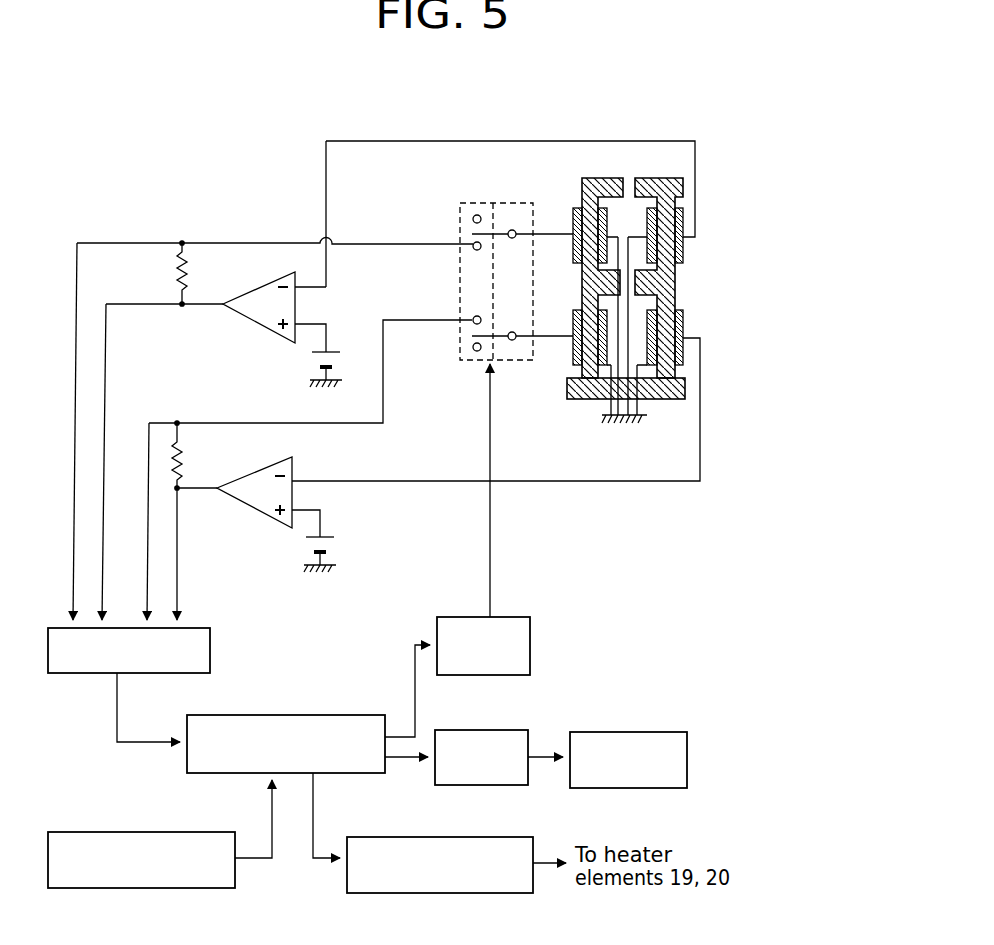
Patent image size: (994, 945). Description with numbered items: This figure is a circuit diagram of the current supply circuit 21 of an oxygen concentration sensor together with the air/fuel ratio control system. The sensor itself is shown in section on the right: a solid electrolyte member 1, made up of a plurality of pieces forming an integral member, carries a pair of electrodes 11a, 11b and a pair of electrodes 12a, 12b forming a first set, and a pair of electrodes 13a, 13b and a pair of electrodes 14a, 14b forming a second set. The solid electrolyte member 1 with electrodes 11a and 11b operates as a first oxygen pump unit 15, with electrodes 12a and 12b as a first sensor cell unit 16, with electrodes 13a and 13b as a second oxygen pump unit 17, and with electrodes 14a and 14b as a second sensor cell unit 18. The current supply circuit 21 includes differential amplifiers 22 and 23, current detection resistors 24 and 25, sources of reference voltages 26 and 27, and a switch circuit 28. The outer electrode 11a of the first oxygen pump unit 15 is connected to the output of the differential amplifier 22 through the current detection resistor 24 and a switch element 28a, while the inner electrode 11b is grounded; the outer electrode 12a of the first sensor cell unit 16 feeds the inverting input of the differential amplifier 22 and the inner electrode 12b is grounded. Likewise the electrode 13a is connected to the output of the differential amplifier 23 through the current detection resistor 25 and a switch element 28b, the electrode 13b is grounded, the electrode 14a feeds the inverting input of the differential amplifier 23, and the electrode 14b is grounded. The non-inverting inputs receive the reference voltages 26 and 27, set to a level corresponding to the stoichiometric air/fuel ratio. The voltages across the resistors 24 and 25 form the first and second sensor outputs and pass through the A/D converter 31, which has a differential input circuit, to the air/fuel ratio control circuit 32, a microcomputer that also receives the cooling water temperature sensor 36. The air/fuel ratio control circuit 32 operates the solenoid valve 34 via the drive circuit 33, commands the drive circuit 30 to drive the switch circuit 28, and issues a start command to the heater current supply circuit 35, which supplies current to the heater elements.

The solid electrolyte member 1 is at (666, 399).
The electrode 11a is at (573, 248).
The electrode 11b is at (612, 228).
The electrode 12a is at (683, 251).
The electrode 12b is at (652, 265).
The electrode 13a is at (573, 321).
The electrode 13b is at (610, 400).
The electrode 14a is at (684, 361).
The electrode 14b is at (656, 306).
The first oxygen pump unit 15 is at (577, 203).
The first sensor cell unit 16 is at (701, 222).
The second oxygen pump unit 17 is at (566, 354).
The second sensor cell unit 18 is at (688, 334).
The current supply circuit 21 is at (256, 237).
The differential amplifier 22 is at (258, 322).
The differential amplifier 23 is at (256, 506).
The current detection resistor 24 is at (176, 269).
The current detection resistor 25 is at (183, 460).
The source of reference voltage 26 is at (334, 364).
The source of reference voltage 27 is at (332, 552).
The switch circuit 28 is at (486, 262).
The switch element 28a is at (493, 213).
The switch element 28b is at (501, 336).
The drive circuit 30 is at (530, 648).
The A/D converter 31 is at (185, 628).
The air/fuel ratio control circuit 32 is at (341, 715).
The drive circuit 33 is at (498, 730).
The solenoid valve 34 is at (621, 732).
The heater current supply circuit 35 is at (492, 837).
The cooling water temperature sensor 36 is at (192, 832).